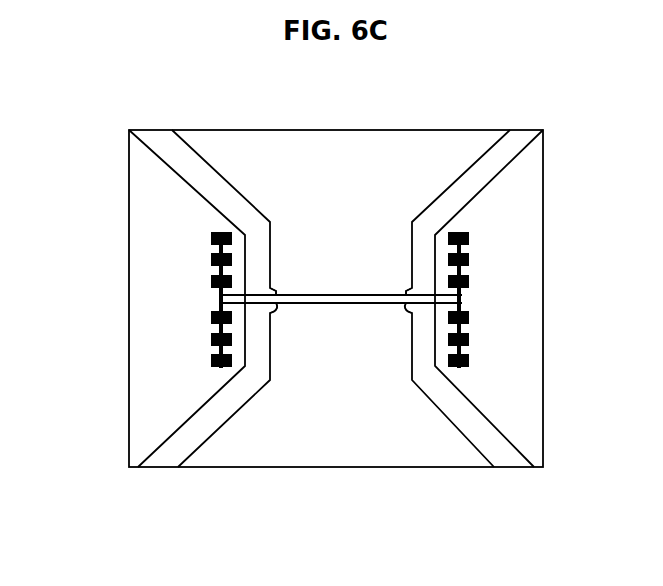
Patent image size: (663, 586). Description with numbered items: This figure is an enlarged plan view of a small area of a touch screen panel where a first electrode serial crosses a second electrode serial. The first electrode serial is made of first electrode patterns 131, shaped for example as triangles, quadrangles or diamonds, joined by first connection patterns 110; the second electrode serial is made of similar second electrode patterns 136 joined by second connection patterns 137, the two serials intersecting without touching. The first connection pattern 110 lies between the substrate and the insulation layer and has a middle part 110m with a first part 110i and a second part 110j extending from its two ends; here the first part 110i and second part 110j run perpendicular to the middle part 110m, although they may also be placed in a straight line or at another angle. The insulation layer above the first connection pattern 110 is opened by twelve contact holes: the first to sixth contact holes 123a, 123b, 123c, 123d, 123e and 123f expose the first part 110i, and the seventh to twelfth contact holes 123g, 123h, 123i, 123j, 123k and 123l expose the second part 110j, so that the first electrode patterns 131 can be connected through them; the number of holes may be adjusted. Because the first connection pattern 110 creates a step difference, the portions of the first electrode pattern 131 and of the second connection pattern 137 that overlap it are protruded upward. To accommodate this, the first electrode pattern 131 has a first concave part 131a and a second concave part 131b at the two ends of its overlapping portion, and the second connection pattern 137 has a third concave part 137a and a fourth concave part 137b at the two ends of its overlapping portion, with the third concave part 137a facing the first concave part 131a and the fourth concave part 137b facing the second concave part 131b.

The first connection pattern 110 is at (258, 522).
The second part 110j is at (228, 298).
The middle part 110m is at (338, 300).
The first part 110i is at (455, 298).
The first contact hole 123a is at (469, 238).
The second contact hole 123b is at (469, 260).
The third contact hole 123c is at (469, 282).
The fourth contact hole 123d is at (469, 317).
The fifth contact hole 123e is at (469, 340).
The sixth contact hole 123f is at (469, 361).
The seventh contact hole 123g is at (211, 238).
The eighth contact hole 123h is at (211, 260).
The ninth contact hole 123i is at (211, 282).
The tenth contact hole 123j is at (211, 318).
The eleventh contact hole 123k is at (211, 340).
The twelfth contact hole 123l is at (211, 361).
The first electrode pattern 131 is at (140, 190).
The first concave part 131a is at (437, 294).
The second concave part 131b is at (243, 294).
The second electrode pattern 136 is at (337, 148).
The second connection pattern 137 is at (367, 248).
The third concave part 137a is at (405, 318).
The fourth concave part 137b is at (277, 318).